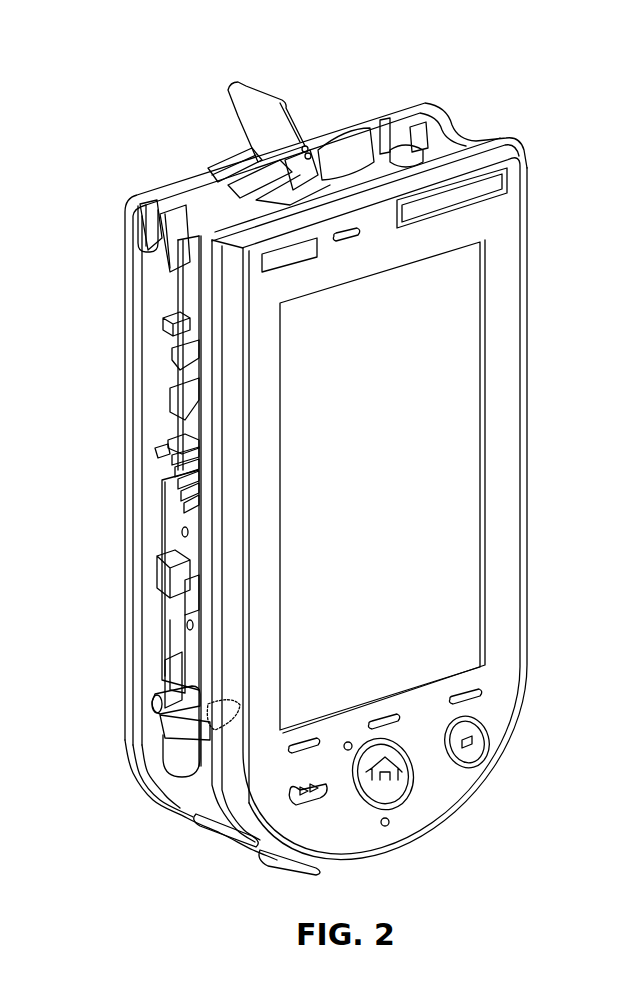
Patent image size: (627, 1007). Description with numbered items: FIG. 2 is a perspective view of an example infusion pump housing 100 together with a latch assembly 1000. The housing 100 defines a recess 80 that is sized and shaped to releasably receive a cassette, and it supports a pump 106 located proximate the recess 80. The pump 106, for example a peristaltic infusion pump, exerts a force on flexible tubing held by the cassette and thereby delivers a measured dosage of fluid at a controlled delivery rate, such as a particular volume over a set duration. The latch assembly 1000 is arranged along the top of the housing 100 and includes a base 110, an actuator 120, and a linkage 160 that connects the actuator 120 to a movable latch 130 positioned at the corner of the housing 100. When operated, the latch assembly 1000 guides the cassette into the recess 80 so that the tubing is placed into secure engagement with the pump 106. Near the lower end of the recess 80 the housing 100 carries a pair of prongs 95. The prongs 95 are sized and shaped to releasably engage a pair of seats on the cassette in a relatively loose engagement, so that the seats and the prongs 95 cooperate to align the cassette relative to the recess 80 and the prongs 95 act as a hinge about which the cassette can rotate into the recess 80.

The latch assembly 1000 is at (478, 80).
The infusion pump housing 100 is at (527, 420).
The movable latch 130 is at (187, 200).
The recess 80 is at (175, 297).
The pump 106 is at (175, 448).
The pair of prongs 95 is at (198, 727).
The actuator 120 is at (236, 112).
The linkage 160 is at (240, 160).
The base 110 is at (338, 152).